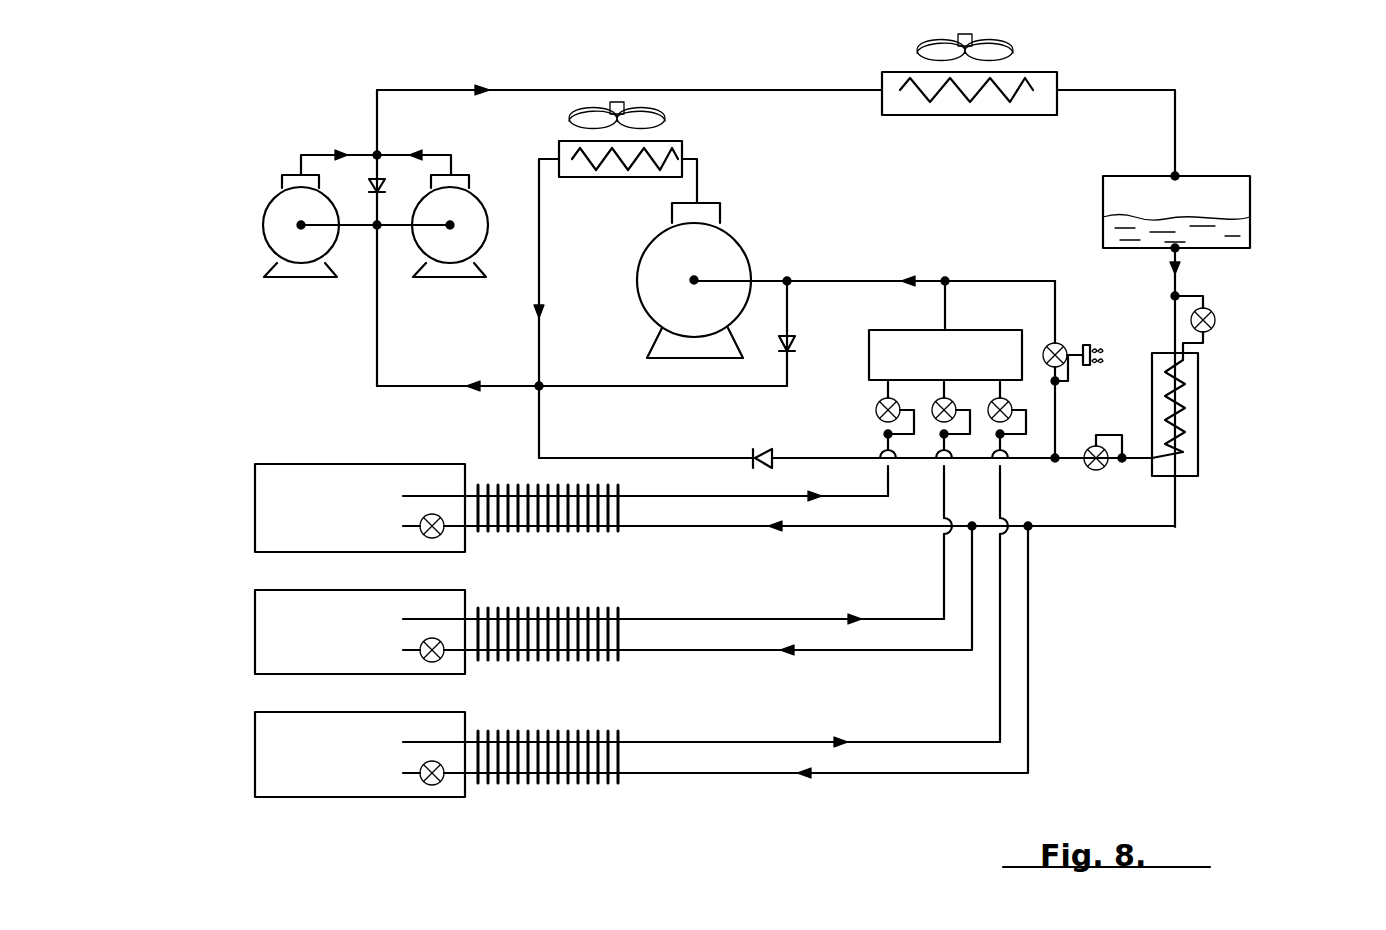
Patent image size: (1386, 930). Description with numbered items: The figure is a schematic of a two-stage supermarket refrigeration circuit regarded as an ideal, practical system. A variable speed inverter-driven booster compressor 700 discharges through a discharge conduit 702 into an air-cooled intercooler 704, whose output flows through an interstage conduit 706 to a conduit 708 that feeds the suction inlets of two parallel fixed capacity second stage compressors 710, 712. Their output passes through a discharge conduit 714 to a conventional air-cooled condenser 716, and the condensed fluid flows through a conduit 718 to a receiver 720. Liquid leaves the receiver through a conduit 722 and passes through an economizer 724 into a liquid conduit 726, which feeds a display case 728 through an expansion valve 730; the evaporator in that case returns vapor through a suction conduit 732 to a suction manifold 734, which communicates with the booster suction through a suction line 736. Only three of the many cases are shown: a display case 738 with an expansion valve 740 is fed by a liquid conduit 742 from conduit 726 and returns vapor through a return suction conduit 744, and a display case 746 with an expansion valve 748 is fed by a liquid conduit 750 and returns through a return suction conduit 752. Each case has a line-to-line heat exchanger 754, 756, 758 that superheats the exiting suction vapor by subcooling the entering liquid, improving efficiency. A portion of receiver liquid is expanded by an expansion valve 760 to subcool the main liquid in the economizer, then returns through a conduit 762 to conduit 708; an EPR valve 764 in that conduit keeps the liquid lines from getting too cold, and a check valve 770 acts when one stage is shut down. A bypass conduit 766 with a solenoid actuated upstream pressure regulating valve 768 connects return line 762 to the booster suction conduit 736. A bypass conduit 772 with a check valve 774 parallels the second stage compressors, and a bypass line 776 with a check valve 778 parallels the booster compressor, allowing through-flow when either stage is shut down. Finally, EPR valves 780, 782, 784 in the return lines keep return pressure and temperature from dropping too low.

The booster compressor 700 is at (740, 258).
The discharge conduit 702 is at (697, 180).
The air-cooled intercooler 704 is at (682, 145).
The interstage conduit 706 is at (541, 298).
The interstage conduit 708 is at (430, 385).
The second stage compressor 710 is at (262, 219).
The second stage compressor 712 is at (470, 240).
The discharge conduit 714 is at (545, 70).
The air-cooled condenser 716 is at (1057, 75).
The conduit 718 is at (1175, 125).
The receiver 720 is at (1250, 193).
The conduit 722 is at (1172, 312).
The economizer 724 is at (1198, 470).
The liquid conduit 726 is at (825, 531).
The display case 728 is at (255, 505).
The expansion valve 730 is at (430, 539).
The suction conduit 732 is at (716, 488).
The suction manifold 734 is at (1003, 330).
The suction line 736 is at (893, 280).
The display case 738 is at (255, 633).
The expansion valve 740 is at (430, 663).
The liquid conduit 742 is at (840, 652).
The return suction conduit 744 is at (770, 615).
The display case 746 is at (255, 753).
The expansion valve 748 is at (430, 786).
The liquid conduit 750 is at (852, 776).
The return suction conduit 752 is at (775, 740).
The line-to-line heat exchanger 754 is at (505, 485).
The line-to-line heat exchanger 756 is at (520, 607).
The line-to-line heat exchanger 758 is at (550, 730).
The expansion valve 760 is at (1215, 318).
The conduit 762 is at (541, 415).
The EPR valve 764 is at (1090, 471).
The bypass conduit 766 is at (1000, 280).
The solenoid actuated upstream pressure regulating valve 768 is at (1068, 345).
The check valve 770 is at (763, 447).
The bypass conduit 772 is at (380, 210).
The check valve 774 is at (369, 183).
The bypass line 776 is at (587, 385).
The check valve 778 is at (797, 340).
The EPR valve 780 is at (876, 411).
The EPR valve 782 is at (956, 405).
The EPR valve 784 is at (1015, 392).